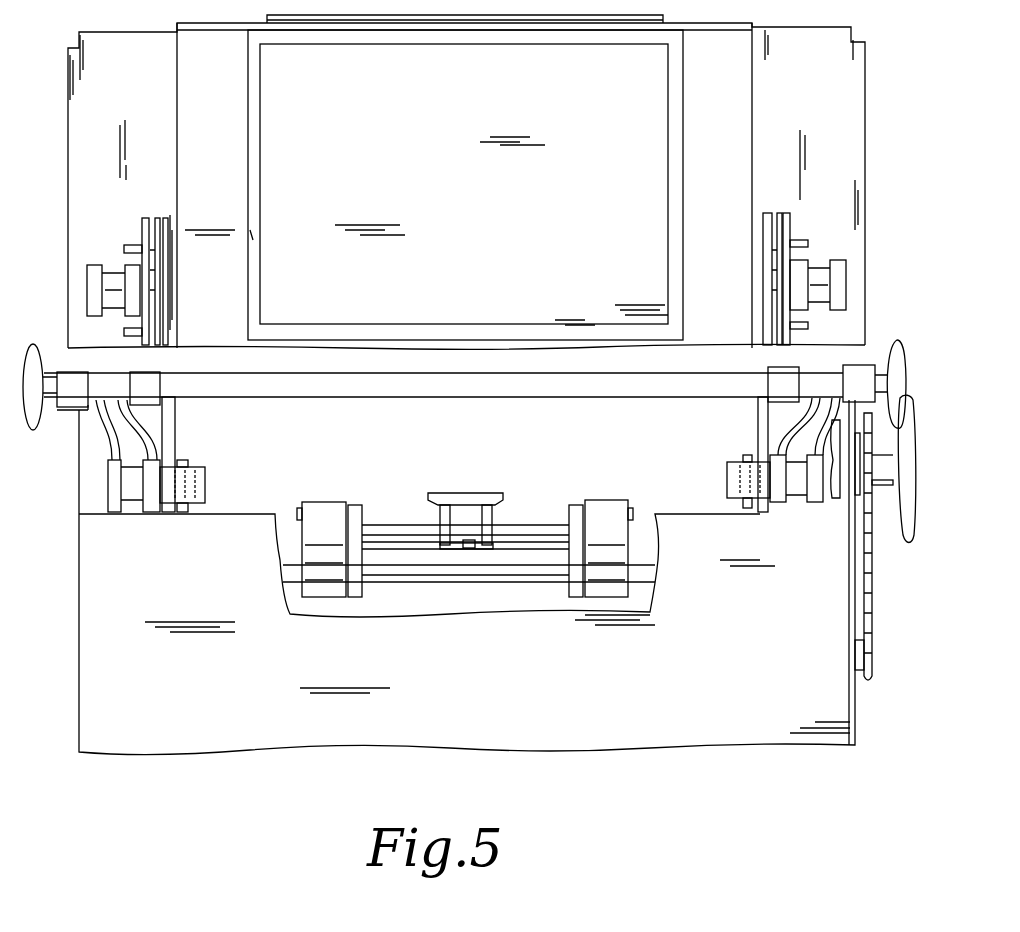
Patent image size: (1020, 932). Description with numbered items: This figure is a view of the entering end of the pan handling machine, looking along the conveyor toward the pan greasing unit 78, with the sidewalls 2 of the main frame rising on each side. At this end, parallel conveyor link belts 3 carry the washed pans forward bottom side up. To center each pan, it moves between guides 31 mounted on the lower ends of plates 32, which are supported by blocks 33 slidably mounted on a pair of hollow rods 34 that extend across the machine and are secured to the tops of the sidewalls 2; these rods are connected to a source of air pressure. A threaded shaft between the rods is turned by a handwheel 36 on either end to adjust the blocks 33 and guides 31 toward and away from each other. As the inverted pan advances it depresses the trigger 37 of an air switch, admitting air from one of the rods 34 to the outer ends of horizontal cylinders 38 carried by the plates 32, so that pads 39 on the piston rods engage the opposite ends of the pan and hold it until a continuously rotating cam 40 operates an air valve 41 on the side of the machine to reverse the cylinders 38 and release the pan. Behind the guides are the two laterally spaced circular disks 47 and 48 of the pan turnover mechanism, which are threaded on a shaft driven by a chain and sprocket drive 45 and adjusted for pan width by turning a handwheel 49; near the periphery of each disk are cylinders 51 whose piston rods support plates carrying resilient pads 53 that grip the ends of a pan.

The pan greasing unit 78 is at (760, 84).
The circular disk 47 is at (143, 222).
The circular disk 48 is at (790, 225).
The cylinder 51 is at (92, 292).
The resilient pad 53 is at (162, 272).
The block 33 is at (152, 375).
The plate 32 is at (175, 428).
The hollow rod 34 is at (428, 388).
The handwheel 36 is at (32, 432).
The sidewall 2 is at (77, 490).
The horizontal cylinder 38 is at (133, 497).
The guide 31 is at (205, 489).
The pad 39 is at (186, 460).
The conveyor link belt 3 is at (323, 506).
The trigger 37 is at (471, 495).
The air valve 41 is at (842, 497).
The cam 40 is at (858, 498).
The handwheel 49 is at (906, 530).
The chain and sprocket drive 45 is at (872, 620).